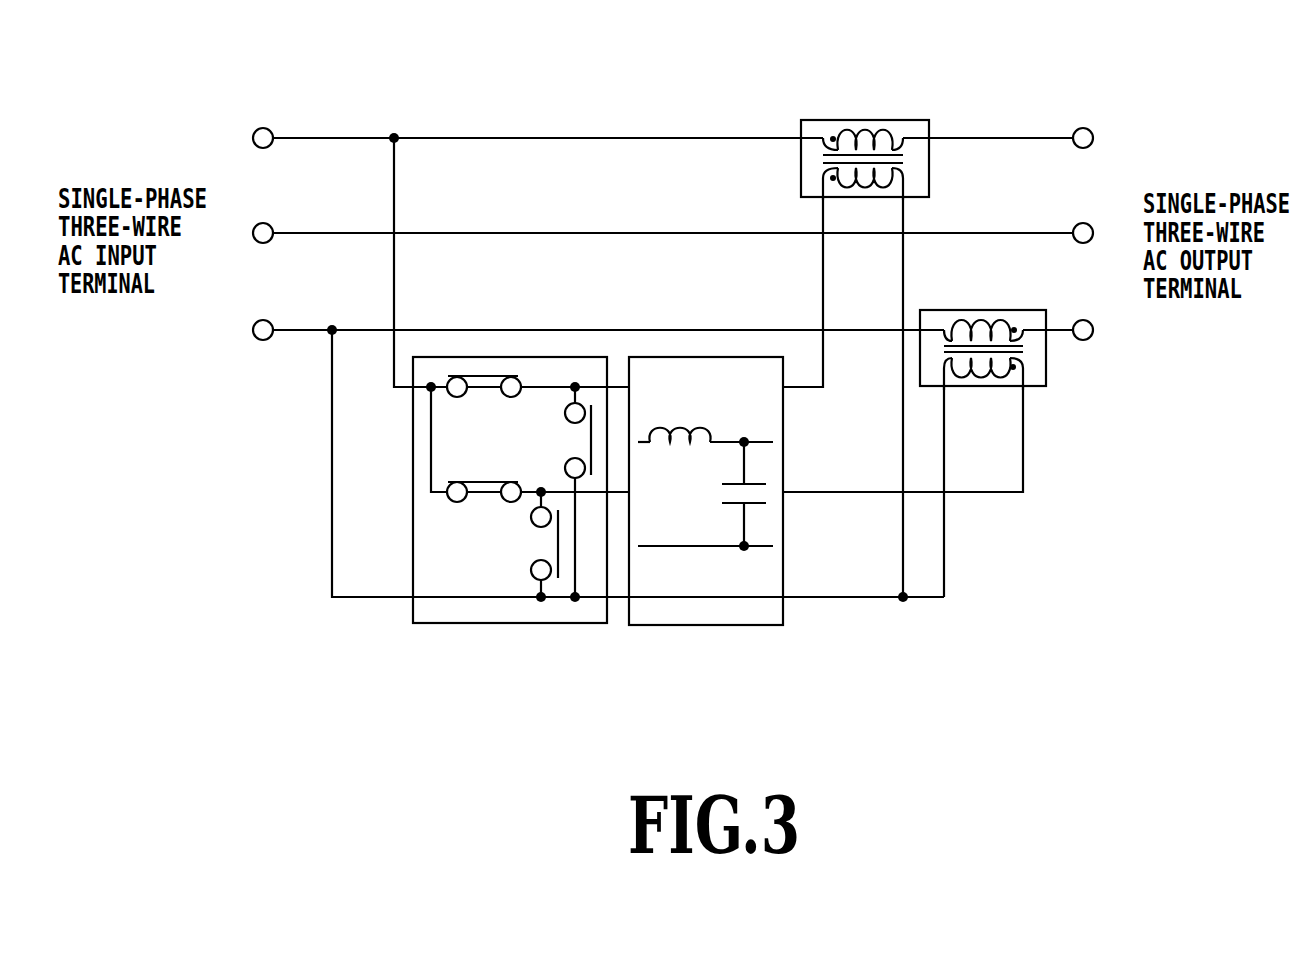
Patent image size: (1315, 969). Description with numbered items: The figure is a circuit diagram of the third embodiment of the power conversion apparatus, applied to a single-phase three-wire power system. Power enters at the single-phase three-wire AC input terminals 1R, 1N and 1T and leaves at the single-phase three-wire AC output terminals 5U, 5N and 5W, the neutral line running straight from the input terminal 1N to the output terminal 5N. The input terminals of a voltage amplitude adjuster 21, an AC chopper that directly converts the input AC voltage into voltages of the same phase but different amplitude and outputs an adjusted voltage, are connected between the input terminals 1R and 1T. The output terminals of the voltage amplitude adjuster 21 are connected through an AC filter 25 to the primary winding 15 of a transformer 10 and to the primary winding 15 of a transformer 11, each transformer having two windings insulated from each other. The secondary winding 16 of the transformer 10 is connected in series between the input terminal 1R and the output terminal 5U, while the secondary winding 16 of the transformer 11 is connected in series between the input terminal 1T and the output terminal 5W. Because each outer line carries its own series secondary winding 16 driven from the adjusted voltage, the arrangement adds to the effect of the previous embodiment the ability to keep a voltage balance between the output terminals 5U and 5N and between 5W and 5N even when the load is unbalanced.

The transformer 10 is at (917, 128).
The transformer 11 is at (1079, 377).
The primary winding 15 is at (893, 187).
The secondary winding 16 is at (889, 128).
The voltage amplitude adjuster 21 is at (480, 624).
The AC filter 25 is at (703, 626).
The single-phase three-wire AC input terminal 1R is at (245, 138).
The single-phase three-wire AC input terminal 1N is at (245, 233).
The single-phase three-wire AC input terminal 1T is at (245, 330).
The single-phase three-wire AC output terminal 5U is at (1100, 138).
The single-phase three-wire AC output terminal 5N is at (1100, 233).
The single-phase three-wire AC output terminal 5W is at (1100, 330).